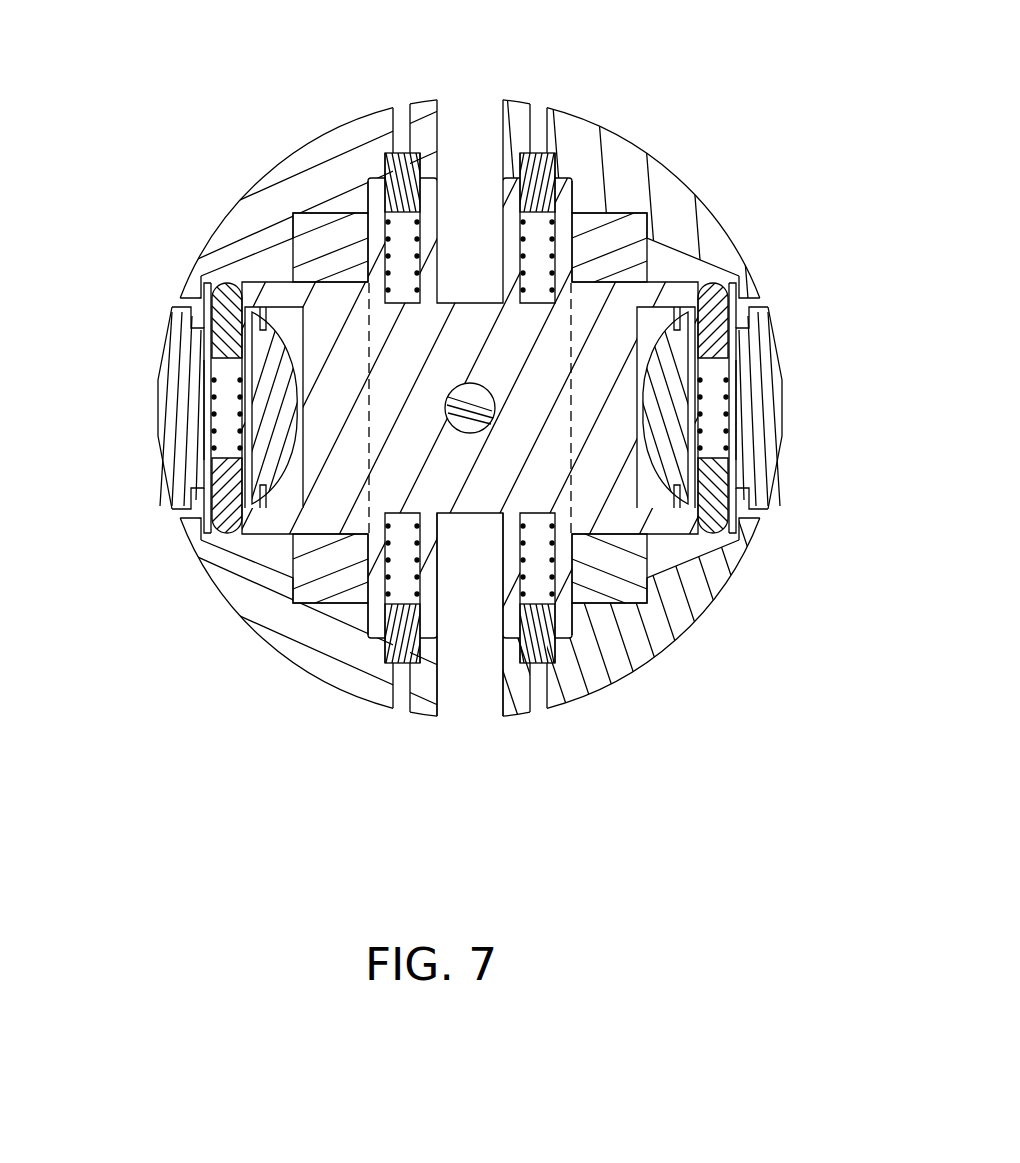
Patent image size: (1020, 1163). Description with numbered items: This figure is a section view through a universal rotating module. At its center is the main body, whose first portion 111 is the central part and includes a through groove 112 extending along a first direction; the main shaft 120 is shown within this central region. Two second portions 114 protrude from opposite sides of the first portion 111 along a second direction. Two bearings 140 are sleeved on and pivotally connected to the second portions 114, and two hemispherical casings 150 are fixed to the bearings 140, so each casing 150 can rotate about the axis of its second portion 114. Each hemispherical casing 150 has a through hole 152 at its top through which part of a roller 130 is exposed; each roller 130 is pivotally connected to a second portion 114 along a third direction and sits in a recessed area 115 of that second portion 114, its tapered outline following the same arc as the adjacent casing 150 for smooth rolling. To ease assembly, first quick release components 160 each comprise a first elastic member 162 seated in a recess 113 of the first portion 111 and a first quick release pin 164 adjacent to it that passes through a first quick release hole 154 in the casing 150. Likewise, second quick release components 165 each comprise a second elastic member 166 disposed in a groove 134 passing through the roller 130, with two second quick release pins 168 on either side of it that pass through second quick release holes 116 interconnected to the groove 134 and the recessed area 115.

The first portion 111 is at (522, 433).
The through groove 112 is at (489, 436).
The recess 113 is at (514, 262).
The second portion 114 is at (290, 510).
The recessed area 115 is at (275, 520).
The second quick release hole 116 is at (233, 277).
The main shaft 120 is at (467, 425).
The roller 130 is at (198, 345).
The groove 134 is at (207, 378).
The bearing 140 is at (318, 232).
The hemispherical casing 150 is at (272, 205).
The through hole 152 is at (176, 297).
The first quick release hole 154 is at (401, 138).
The first quick release component 160 is at (470, 446).
The first elastic member 162 is at (347, 213).
The first quick release pin 164 is at (397, 167).
The second quick release component 165 is at (467, 426).
The second elastic member 166 is at (207, 418).
The second quick release pin 168 is at (210, 392).